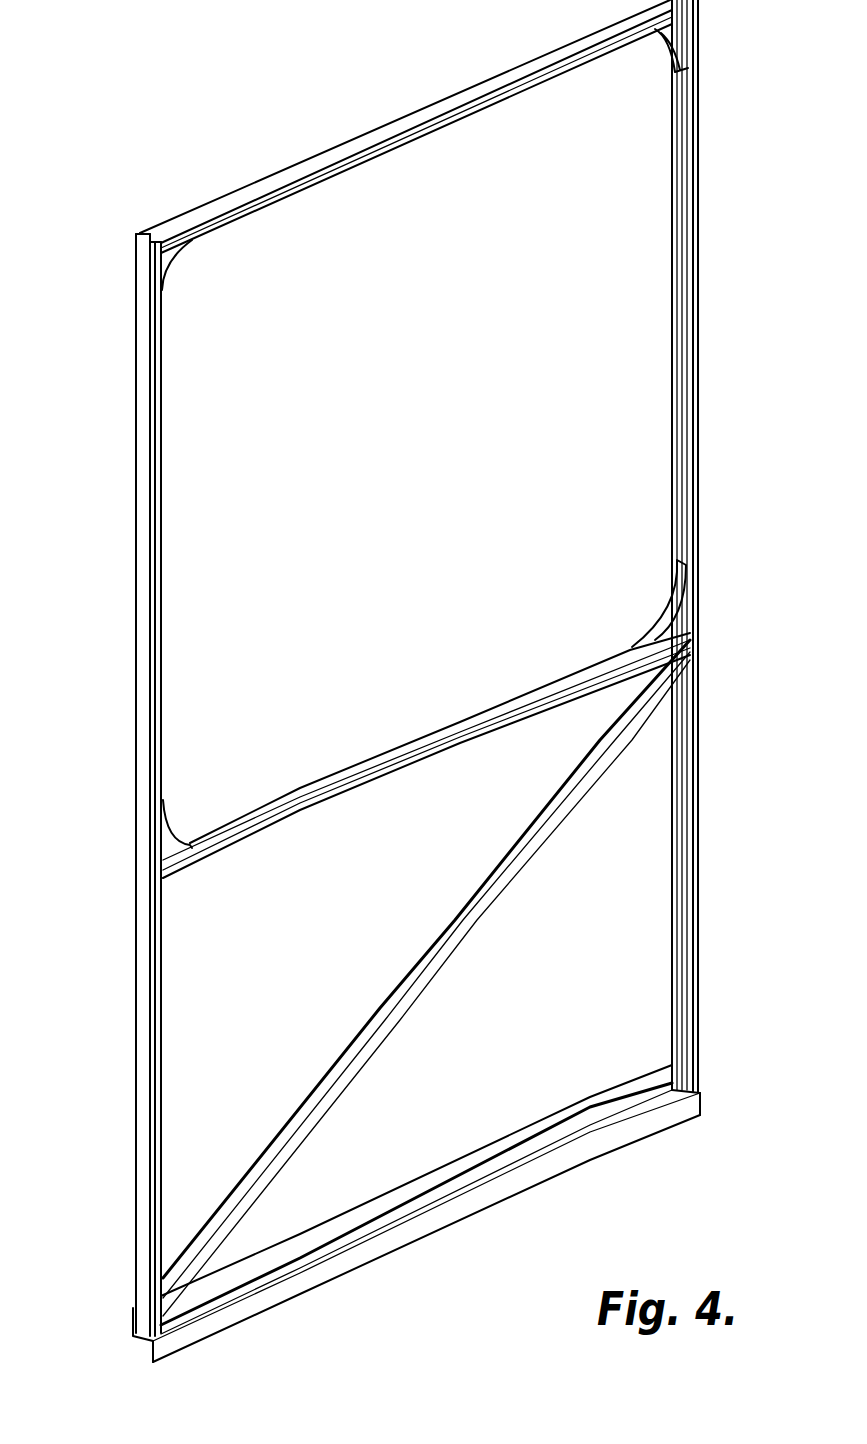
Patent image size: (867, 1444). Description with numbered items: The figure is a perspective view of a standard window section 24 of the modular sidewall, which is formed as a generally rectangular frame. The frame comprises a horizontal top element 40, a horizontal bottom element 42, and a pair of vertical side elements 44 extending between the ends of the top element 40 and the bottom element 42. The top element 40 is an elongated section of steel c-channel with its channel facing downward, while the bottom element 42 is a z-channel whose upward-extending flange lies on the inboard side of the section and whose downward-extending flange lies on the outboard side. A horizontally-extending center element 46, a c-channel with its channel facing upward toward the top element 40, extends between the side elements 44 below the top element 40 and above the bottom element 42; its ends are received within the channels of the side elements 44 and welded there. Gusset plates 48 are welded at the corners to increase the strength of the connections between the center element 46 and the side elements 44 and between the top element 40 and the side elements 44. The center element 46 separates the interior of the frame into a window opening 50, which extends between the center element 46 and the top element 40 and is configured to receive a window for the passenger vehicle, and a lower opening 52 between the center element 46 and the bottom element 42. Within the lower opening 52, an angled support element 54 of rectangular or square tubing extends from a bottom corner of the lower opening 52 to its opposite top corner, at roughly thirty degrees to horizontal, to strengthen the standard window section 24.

The standard window section 24 is at (168, 98).
The horizontal top element 40 is at (383, 128).
The horizontal bottom element 42 is at (388, 1245).
The vertical side elements 44 is at (135, 675).
The horizontally-extending center element 46 is at (312, 812).
The gusset plates 48 is at (170, 258).
The window opening 50 is at (433, 460).
The lower opening 52 is at (326, 960).
The angled support element 54 is at (445, 962).